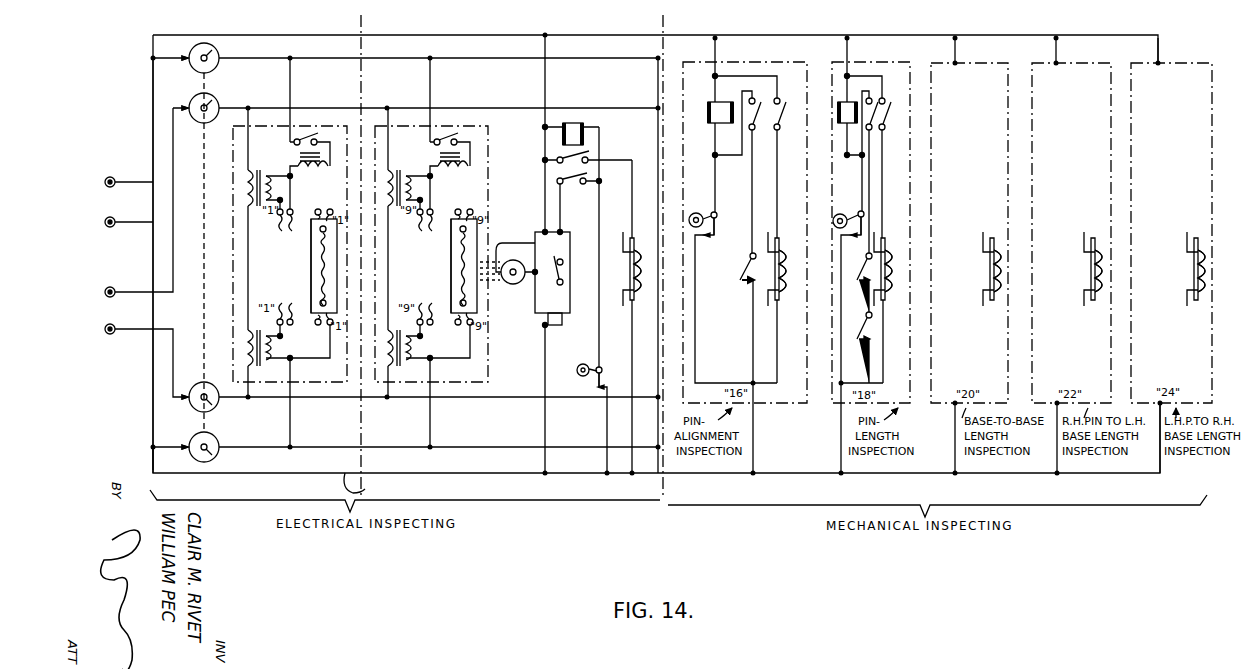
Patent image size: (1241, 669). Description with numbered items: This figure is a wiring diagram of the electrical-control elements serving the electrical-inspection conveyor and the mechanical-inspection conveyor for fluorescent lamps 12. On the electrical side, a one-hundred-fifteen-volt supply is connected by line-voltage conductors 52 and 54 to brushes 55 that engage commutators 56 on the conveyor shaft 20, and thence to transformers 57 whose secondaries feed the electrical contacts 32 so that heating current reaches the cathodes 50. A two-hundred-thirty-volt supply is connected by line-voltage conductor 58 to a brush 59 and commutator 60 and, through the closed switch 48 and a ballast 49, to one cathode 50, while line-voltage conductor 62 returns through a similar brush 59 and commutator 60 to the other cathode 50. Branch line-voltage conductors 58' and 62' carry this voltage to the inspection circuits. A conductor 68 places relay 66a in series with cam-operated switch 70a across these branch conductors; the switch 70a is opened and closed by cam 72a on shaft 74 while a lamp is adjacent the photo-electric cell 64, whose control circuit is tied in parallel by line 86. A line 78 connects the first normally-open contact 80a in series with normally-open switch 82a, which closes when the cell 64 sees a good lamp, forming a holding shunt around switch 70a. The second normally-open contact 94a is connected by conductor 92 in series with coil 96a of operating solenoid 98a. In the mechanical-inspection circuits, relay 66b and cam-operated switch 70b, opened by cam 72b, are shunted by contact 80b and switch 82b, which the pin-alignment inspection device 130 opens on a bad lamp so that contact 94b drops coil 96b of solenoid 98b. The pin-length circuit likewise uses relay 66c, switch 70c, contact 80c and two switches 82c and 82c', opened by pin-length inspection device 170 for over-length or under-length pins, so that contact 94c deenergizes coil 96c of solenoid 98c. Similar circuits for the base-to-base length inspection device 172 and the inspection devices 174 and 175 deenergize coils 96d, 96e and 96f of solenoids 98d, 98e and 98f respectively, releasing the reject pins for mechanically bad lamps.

The fluorescent lamp 12 is at (310, 274).
The conveyor shaft 20 is at (212, 100).
The electrical contacts 32 is at (322, 207).
The switch 48 is at (312, 142).
The ballast 49 is at (298, 158).
The cathode 50 is at (326, 290).
The line-voltage conductor 52 is at (140, 288).
The line-voltage conductor 54 is at (134, 328).
The brush 55 is at (182, 114).
The commutator 56 is at (190, 98).
The transformer 57 is at (264, 170).
The line-voltage conductor 58 is at (137, 265).
The branch line-voltage conductor 58' is at (550, 26).
The brush 59 is at (184, 56).
The commutator 60 is at (219, 50).
The line-voltage conductor 62 is at (140, 458).
The branch line-voltage conductor 62' is at (571, 485).
The photo-electric cell 64 is at (514, 284).
The relay 66a is at (590, 124).
The relay 66b is at (708, 106).
The relay 66c is at (847, 112).
The conductor 68 is at (545, 100).
The cam-operated switch 70a is at (598, 386).
The cam-operated switch 70b is at (706, 234).
The cam-operated switch 70c is at (846, 198).
The cam 72a is at (582, 368).
The cam 72b is at (696, 204).
The shaft 74 is at (577, 372).
The line 78 is at (566, 234).
The first normally-open contact 80a is at (568, 184).
The first normally-open contact 80b is at (754, 134).
The first normally-open contact 80c is at (872, 175).
The normally-open switch 82a is at (564, 273).
The switch 82b is at (742, 278).
The switch 82c is at (854, 275).
The switch 82c' is at (854, 338).
The line 86 is at (545, 202).
The conductor 92 is at (632, 200).
The second normally-open contact 94a is at (592, 156).
The second normally-open contact 94b is at (782, 134).
The second normally-open contact 94c is at (885, 168).
The coil 96a is at (632, 274).
The coil 96b is at (784, 304).
The coil 96c is at (892, 238).
The coil 96d is at (998, 234).
The coil 96e is at (1100, 234).
The coil 96f is at (1202, 234).
The operating solenoid 98a is at (620, 242).
The pin-alignment inspection solenoid 98b is at (788, 234).
The pin-length inspection solenoid 98c is at (894, 304).
The base-to-base length inspection solenoid 98d is at (986, 274).
The right-hand pin to left-hand base length inspection solenoid 98e is at (1086, 274).
The left-hand pin to right-hand base length inspection solenoid 98f is at (1188, 274).
The pin-alignment inspection device 130 is at (738, 373).
The pin-length inspection device 170 is at (912, 386).
The base-to-base length inspection device 172 is at (974, 361).
The inspection device 174 is at (1076, 361).
The inspection device 175 is at (1176, 361).